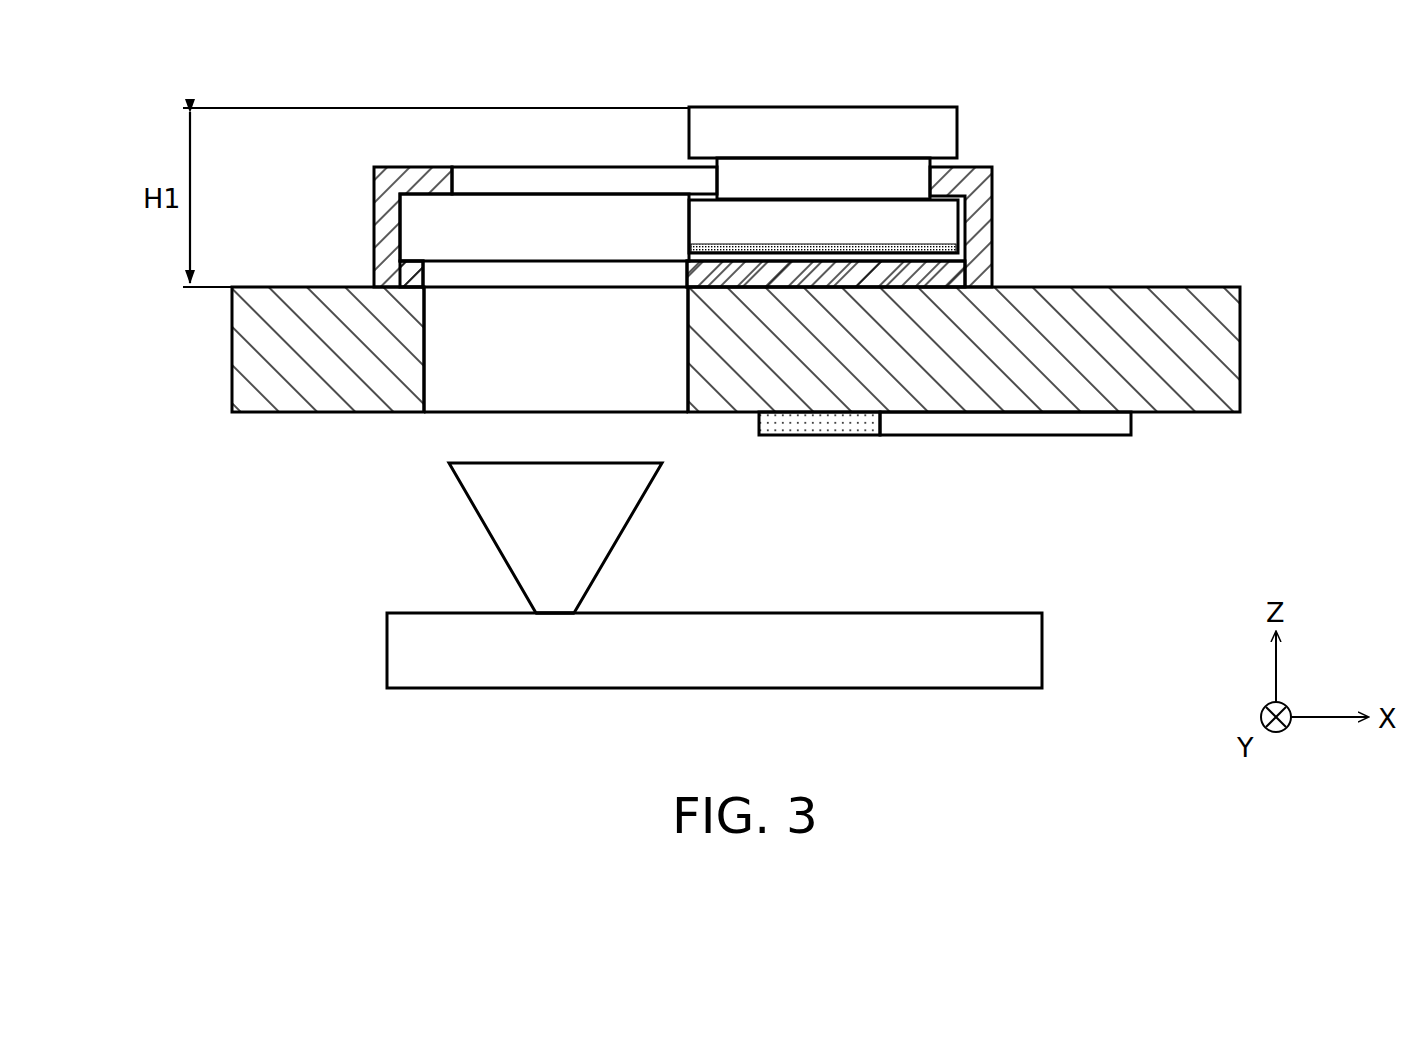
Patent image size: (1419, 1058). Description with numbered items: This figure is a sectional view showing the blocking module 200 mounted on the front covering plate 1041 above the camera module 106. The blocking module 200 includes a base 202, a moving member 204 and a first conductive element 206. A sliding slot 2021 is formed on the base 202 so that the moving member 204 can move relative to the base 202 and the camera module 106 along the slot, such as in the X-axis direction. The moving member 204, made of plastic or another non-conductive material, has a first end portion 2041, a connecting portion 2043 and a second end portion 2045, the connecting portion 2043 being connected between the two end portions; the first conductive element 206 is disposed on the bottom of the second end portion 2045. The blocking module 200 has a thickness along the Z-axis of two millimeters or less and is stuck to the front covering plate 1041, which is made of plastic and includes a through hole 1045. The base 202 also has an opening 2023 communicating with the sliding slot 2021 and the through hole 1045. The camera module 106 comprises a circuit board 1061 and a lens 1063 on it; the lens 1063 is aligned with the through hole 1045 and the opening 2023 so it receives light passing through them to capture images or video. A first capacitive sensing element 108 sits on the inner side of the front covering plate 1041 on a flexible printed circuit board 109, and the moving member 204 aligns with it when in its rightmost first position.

The blocking module 200 is at (358, 150).
The base 202 is at (374, 184).
The sliding slot 2021 is at (423, 208).
The opening 2023 is at (420, 280).
The moving member 204 is at (1092, 115).
The first end portion 2041 is at (935, 133).
The connecting portion 2043 is at (910, 178).
The second end portion 2045 is at (945, 213).
The first conductive element 206 is at (945, 247).
The front covering plate 1041 is at (1215, 352).
The through hole 1045 is at (422, 338).
The first capacitive sensing element 108 is at (825, 425).
The flexible printed circuit board 109 is at (1013, 423).
The camera module 106 is at (408, 543).
The circuit board 1061 is at (1015, 650).
The lens 1063 is at (559, 593).